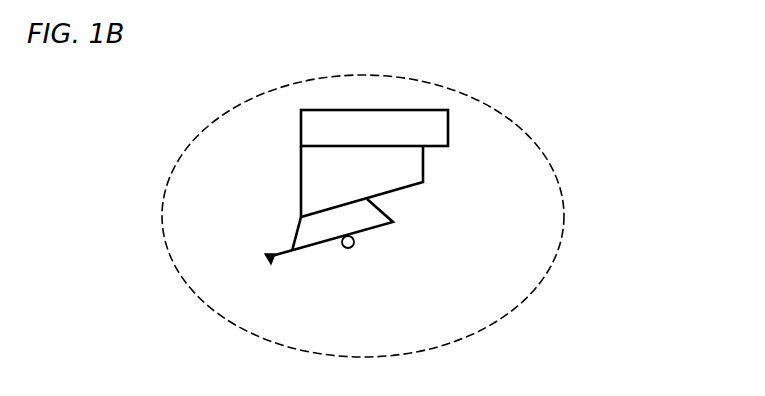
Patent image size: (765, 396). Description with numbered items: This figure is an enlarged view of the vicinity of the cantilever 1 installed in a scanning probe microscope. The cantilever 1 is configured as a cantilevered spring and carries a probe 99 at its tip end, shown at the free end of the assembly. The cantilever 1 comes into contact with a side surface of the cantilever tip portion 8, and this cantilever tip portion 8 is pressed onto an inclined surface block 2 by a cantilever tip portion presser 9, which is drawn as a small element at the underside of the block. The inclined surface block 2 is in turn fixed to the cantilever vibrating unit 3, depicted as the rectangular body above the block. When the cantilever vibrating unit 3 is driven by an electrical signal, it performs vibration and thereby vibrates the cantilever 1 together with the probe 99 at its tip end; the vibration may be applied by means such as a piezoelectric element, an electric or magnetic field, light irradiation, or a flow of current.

The cantilever 1 is at (305, 267).
The inclined surface block 2 is at (398, 172).
The cantilever vibrating unit 3 is at (430, 118).
The cantilever tip portion 8 is at (373, 214).
The cantilever tip portion presser 9 is at (352, 248).
The probe 99 is at (266, 256).